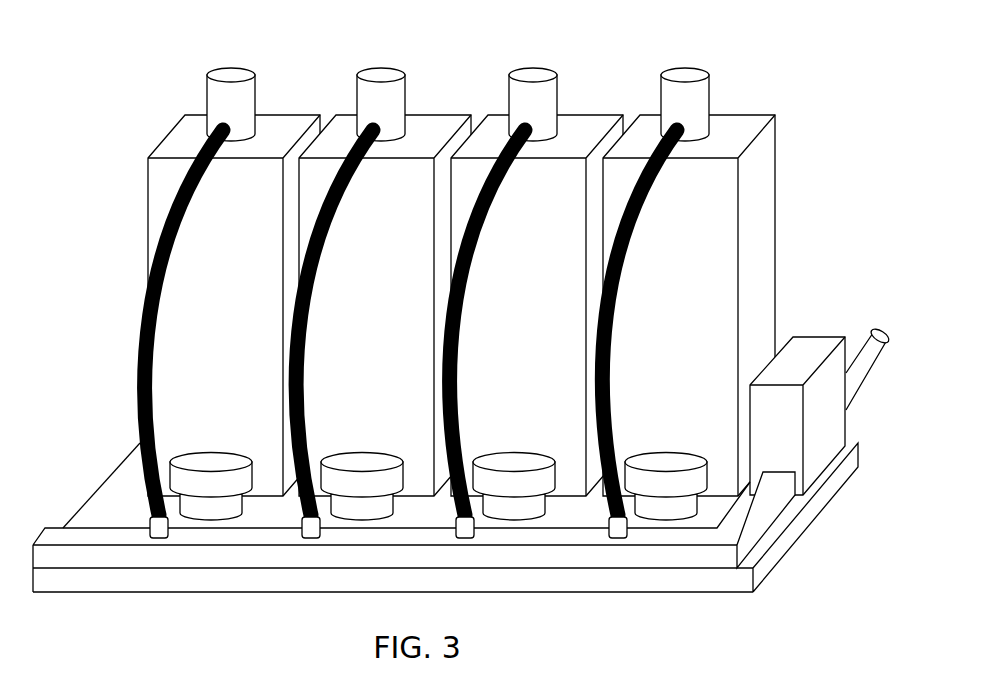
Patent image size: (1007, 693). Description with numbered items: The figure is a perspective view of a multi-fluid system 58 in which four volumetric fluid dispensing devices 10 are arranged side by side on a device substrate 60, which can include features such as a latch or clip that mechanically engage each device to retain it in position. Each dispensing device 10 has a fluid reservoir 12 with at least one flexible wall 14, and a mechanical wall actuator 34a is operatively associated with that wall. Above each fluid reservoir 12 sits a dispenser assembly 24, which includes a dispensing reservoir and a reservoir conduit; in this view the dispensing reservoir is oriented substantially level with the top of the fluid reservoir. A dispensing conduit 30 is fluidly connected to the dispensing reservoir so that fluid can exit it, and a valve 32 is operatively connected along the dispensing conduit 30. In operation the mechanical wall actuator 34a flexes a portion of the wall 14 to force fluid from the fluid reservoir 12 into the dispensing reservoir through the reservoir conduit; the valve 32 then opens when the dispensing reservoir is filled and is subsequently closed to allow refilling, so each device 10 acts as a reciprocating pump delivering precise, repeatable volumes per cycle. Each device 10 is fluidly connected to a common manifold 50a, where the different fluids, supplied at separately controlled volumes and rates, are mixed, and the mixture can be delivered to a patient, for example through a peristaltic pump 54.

The multi-fluid system 58 is at (462, 324).
The volumetric fluid dispensing device 10 is at (460, 269).
The dispenser assembly 24 is at (508, 90).
The fluid reservoir 12 is at (681, 340).
The dispensing conduit 30 is at (608, 260).
The flexible wall 14 is at (681, 443).
The mechanical wall actuator 34a is at (687, 495).
The valve 32 is at (608, 538).
The peristaltic pump 54 is at (763, 440).
The device substrate 60 is at (765, 564).
The manifold 50a is at (683, 555).